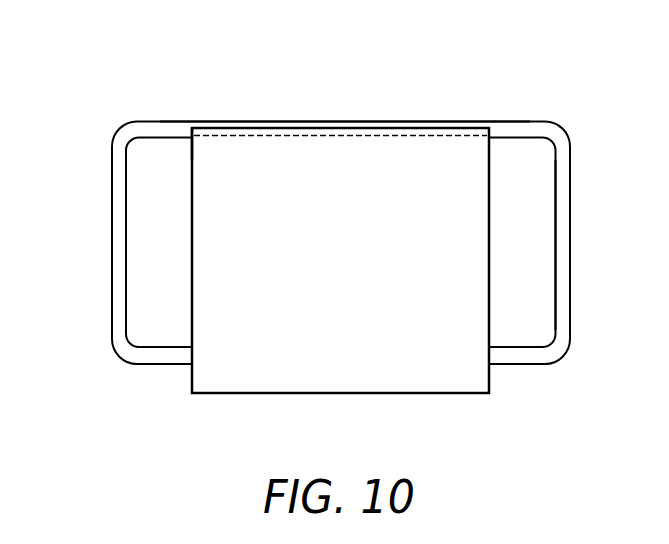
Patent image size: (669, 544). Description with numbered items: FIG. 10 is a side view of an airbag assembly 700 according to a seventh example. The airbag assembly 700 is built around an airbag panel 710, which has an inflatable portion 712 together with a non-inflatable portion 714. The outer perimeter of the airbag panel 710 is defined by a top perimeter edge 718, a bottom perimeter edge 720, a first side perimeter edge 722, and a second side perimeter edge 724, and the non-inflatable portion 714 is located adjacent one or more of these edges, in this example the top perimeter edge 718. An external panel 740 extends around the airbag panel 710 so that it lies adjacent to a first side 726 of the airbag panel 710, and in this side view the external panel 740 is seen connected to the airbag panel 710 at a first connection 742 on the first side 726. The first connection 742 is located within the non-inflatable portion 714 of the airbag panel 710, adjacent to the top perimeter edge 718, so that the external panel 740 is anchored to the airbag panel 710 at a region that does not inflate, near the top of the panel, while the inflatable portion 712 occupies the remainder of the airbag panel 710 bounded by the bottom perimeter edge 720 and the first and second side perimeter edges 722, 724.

The airbag assembly 700 is at (97, 59).
The airbag panel 710 is at (110, 178).
The inflatable portion 712 is at (135, 213).
The non-inflatable portion 714 is at (118, 250).
The top perimeter edge 718 is at (498, 120).
The bottom perimeter edge 720 is at (168, 365).
The first side perimeter edge 722 is at (110, 285).
The second side perimeter edge 724 is at (572, 178).
The first side 726 is at (540, 242).
The external panel 740 is at (190, 153).
The first connection 742 is at (403, 135).